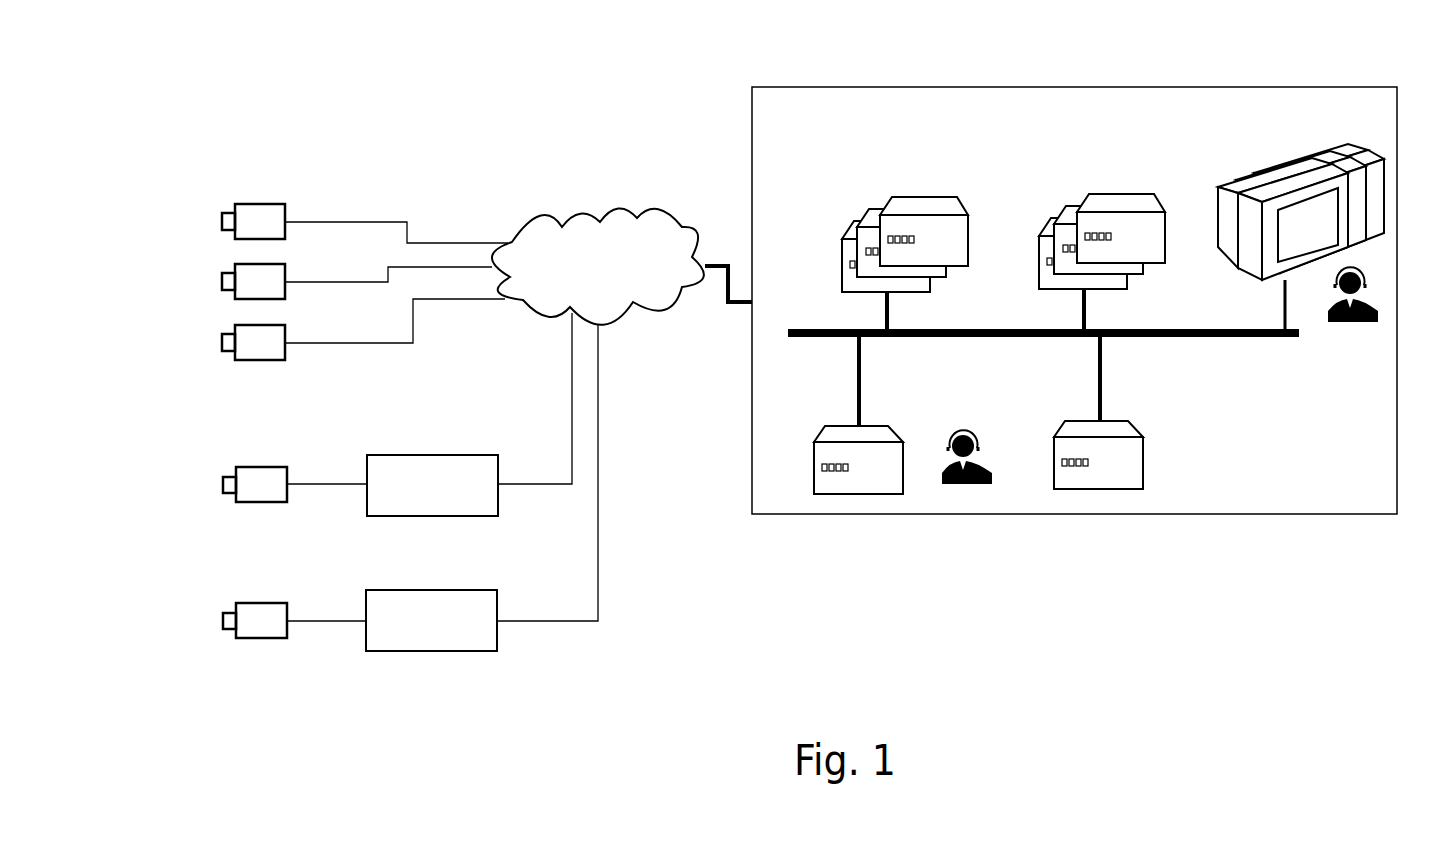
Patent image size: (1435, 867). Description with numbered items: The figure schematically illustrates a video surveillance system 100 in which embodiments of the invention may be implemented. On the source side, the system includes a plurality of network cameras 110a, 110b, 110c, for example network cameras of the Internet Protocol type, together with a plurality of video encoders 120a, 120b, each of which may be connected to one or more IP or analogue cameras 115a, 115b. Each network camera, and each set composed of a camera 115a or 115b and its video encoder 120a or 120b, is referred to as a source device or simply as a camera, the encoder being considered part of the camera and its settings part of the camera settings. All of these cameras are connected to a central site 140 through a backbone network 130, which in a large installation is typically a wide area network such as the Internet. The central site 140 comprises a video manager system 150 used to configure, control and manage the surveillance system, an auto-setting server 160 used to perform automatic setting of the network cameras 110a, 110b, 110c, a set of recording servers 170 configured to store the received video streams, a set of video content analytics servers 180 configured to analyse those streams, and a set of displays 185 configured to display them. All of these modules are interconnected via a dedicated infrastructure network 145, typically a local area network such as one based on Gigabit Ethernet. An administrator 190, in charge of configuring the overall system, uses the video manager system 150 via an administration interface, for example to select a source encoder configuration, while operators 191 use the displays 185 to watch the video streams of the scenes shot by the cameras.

The video surveillance system 100 is at (448, 82).
The network camera 110a is at (228, 218).
The network camera 110b is at (228, 286).
The network camera 110c is at (228, 345).
The IP or analogue camera 115a is at (230, 485).
The IP or analogue camera 115b is at (228, 621).
The video encoder 120a is at (432, 455).
The video encoder 120b is at (432, 590).
The backbone network 130 is at (607, 207).
The central site 140 is at (975, 87).
The dedicated infrastructure network 145 is at (1162, 338).
The video manager system 150 is at (840, 426).
The auto-setting server 160 is at (1146, 455).
The recording servers 170 is at (866, 212).
The video content analytics servers 180 is at (1065, 210).
The displays 185 is at (1237, 178).
The administrator 190 is at (968, 432).
The operators 191 is at (1352, 321).